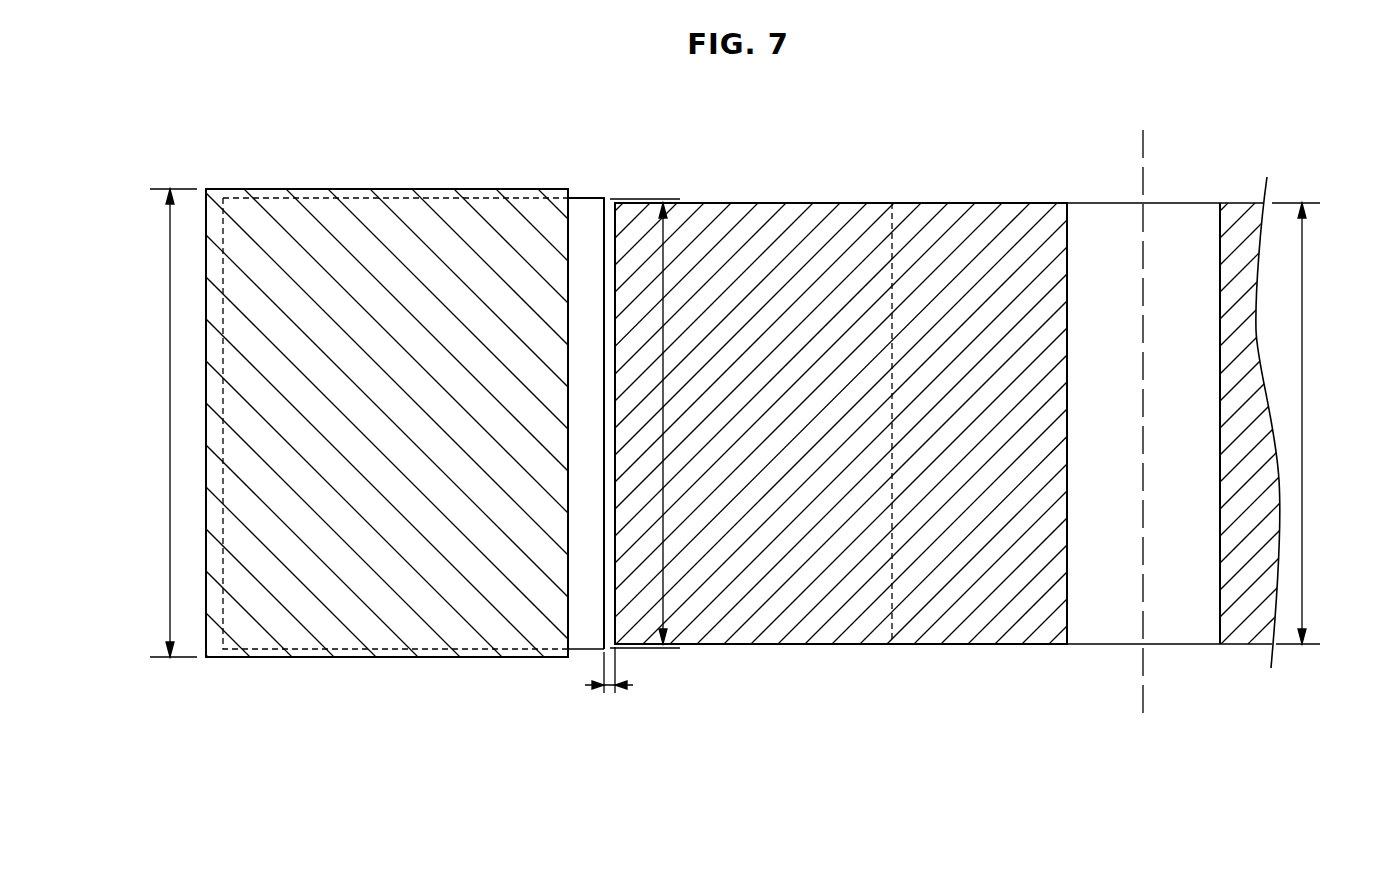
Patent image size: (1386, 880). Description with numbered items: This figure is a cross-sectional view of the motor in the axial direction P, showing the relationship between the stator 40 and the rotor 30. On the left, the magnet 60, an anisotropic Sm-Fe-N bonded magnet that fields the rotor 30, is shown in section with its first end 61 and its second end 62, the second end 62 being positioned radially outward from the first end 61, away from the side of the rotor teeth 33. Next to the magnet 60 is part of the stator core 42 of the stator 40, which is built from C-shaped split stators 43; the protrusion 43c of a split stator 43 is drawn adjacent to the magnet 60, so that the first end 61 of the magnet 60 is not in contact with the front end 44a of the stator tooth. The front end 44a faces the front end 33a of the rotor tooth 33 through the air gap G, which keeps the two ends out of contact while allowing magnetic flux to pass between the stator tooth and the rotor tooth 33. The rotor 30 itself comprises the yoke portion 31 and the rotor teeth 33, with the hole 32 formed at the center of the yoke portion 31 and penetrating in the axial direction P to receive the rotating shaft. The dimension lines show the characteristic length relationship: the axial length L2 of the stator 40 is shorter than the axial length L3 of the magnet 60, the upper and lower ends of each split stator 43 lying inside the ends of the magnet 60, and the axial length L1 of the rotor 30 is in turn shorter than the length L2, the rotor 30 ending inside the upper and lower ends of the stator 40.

The rotor 30 is at (784, 473).
The yoke portion 31 is at (970, 645).
The hole 32 is at (1220, 614).
The rotor teeth 33 is at (775, 645).
The front end of rotor tooth 33a is at (615, 596).
The stator 40 is at (532, 705).
The stator core 42 is at (576, 644).
The split stator 43 is at (578, 366).
The protrusion 43c is at (571, 230).
The front end of stator tooth 44a is at (606, 229).
The magnet 60 is at (318, 177).
The first end 61 is at (593, 196).
The second end 62 is at (207, 217).
The axial direction P is at (1140, 148).
The air gap G is at (609, 687).
The length of rotor in axial direction L1 is at (1307, 423).
The length of stator in axial direction L2 is at (657, 423).
The length of magnet in axial direction L3 is at (164, 423).